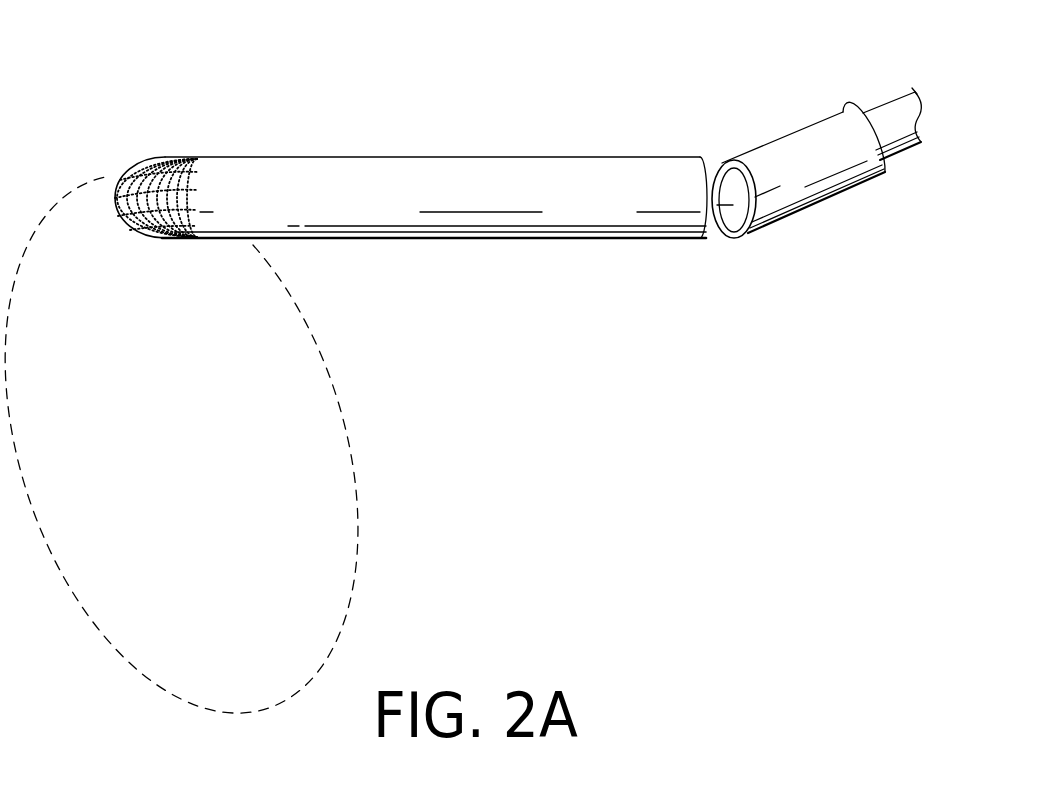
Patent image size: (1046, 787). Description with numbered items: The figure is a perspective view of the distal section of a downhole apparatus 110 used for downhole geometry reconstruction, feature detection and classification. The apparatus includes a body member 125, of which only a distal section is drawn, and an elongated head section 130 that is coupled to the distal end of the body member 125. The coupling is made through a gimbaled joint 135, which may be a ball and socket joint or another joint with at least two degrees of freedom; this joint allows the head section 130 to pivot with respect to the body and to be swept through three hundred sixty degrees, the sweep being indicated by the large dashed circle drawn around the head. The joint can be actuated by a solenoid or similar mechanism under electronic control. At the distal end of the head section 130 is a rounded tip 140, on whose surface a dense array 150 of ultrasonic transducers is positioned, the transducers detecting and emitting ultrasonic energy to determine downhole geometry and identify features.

The downhole apparatus 110 is at (342, 85).
The body member 125 is at (818, 130).
The head section 130 is at (513, 157).
The gimbaled joint 135 is at (727, 237).
The tip 140 is at (120, 127).
The array of ultrasonic transducers 150 is at (148, 158).